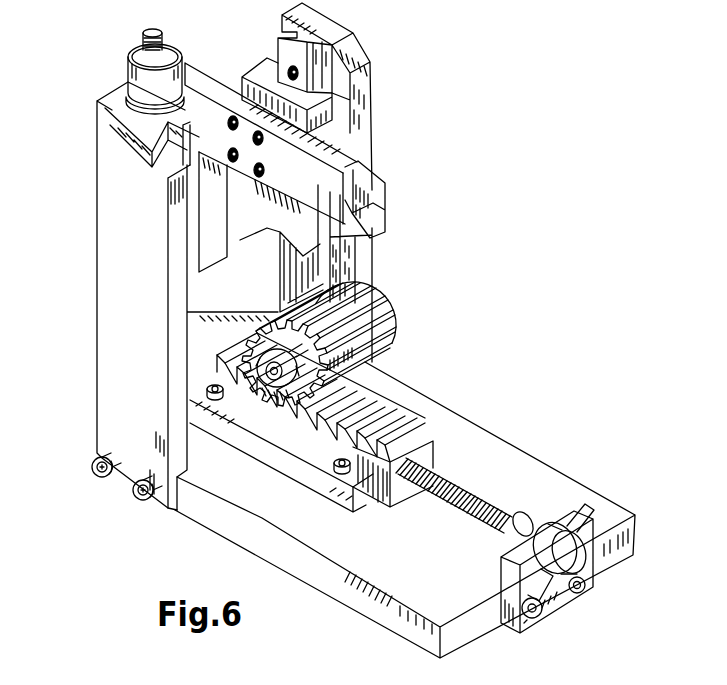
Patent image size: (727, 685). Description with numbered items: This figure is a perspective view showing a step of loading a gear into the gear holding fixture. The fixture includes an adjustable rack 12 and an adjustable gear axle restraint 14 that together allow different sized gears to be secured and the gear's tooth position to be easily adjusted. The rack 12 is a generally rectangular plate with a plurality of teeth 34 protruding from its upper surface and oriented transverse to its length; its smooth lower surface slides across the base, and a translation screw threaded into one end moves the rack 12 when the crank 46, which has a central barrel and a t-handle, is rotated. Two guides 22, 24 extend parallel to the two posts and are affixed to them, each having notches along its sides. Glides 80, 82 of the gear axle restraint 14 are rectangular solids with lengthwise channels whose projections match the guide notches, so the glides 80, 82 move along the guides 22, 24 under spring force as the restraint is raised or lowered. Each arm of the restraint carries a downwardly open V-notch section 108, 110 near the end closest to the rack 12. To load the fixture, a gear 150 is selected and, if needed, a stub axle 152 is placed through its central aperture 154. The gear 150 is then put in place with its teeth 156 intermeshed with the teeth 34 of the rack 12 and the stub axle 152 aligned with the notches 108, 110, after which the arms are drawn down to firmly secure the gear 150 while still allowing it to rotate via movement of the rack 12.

The adjustable rack 12 is at (385, 493).
The gear axle restraint 14 is at (357, 151).
The guide 22 is at (160, 126).
The guide 24 is at (305, 37).
The teeth 34 is at (427, 436).
The crank 46 is at (585, 505).
The glide 80 is at (200, 222).
The glide 82 is at (332, 108).
The V-notch section 108 is at (253, 235).
The V-notch section 110 is at (356, 210).
The gear 150 is at (362, 358).
The stub axle 152 is at (274, 389).
The central aperture 154 is at (218, 399).
The teeth 156 is at (352, 312).